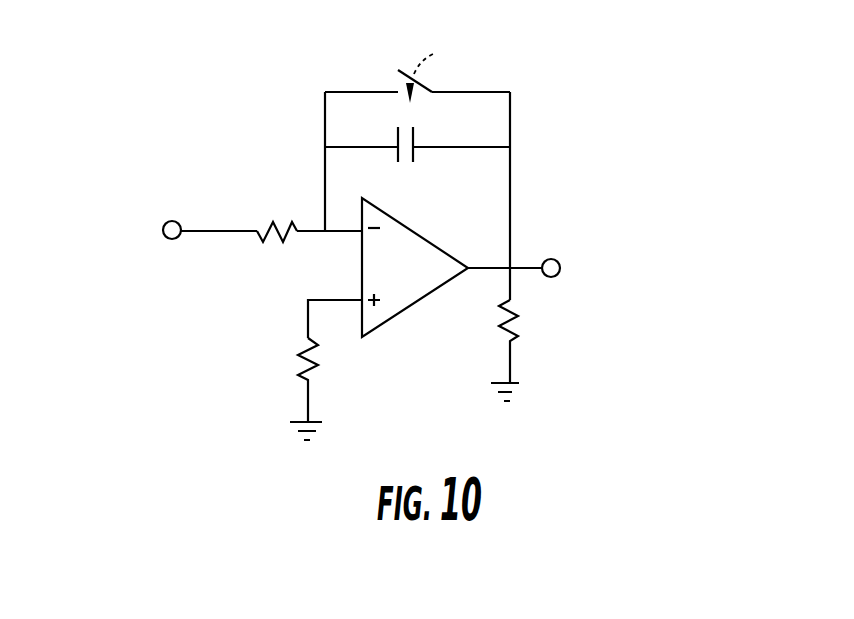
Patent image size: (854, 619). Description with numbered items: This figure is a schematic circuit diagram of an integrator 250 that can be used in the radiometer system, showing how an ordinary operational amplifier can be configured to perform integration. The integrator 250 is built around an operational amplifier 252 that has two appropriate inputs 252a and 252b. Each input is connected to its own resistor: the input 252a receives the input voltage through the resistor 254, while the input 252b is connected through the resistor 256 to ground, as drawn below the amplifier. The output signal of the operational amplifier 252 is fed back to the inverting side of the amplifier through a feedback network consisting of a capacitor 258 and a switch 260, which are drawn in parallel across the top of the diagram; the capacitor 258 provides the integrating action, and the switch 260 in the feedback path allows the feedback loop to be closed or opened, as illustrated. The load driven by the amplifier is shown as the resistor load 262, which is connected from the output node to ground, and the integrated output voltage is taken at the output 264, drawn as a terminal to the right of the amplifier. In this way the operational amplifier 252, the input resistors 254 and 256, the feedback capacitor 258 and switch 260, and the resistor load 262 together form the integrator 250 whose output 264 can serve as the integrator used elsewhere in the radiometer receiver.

The integrator 250 is at (590, 126).
The operational amplifier 252 is at (402, 298).
The input 252a is at (354, 238).
The input 252b is at (357, 296).
The resistor 254 is at (268, 228).
The resistor 256 is at (302, 368).
The capacitor 258 is at (404, 142).
The switch 260 is at (421, 83).
The resistor load 262 is at (514, 312).
The output 264 is at (553, 258).